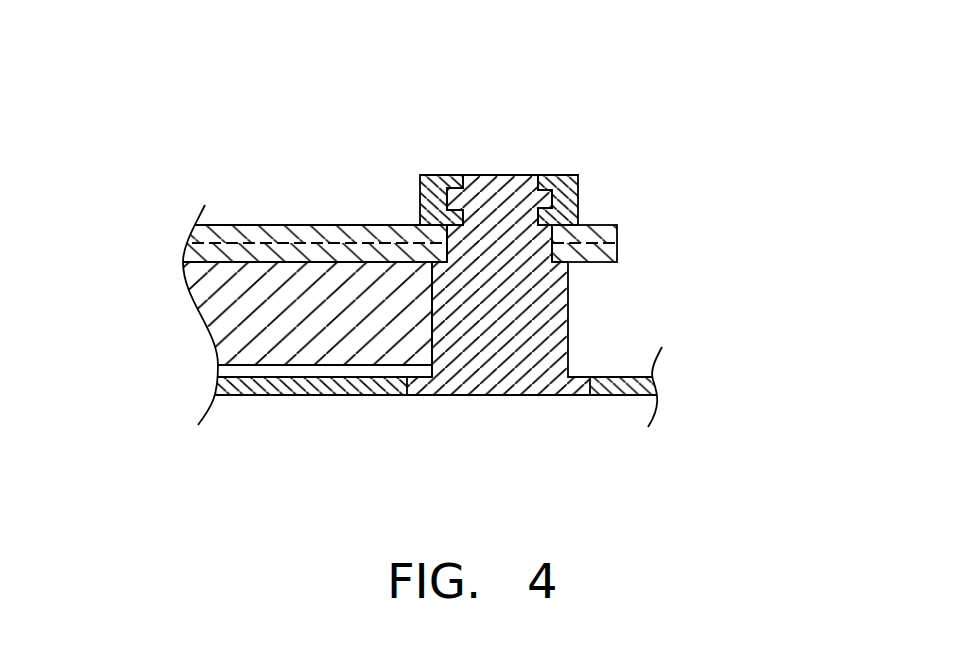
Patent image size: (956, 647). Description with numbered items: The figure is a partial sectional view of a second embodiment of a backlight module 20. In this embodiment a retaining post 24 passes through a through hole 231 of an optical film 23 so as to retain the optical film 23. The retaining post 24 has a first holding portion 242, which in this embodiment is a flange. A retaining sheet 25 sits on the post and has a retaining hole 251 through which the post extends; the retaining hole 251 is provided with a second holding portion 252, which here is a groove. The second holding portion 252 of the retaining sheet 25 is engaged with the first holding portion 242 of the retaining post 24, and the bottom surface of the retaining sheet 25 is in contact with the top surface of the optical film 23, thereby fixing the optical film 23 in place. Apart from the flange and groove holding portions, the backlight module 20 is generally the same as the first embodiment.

The backlight module 20 is at (435, 257).
The optical film 23 is at (277, 249).
The through hole 231 is at (453, 243).
The retaining post 24 is at (475, 257).
The first holding portion 242 is at (447, 200).
The retaining sheet 25 is at (600, 161).
The retaining hole 251 is at (498, 155).
The second holding portion 252 is at (537, 184).